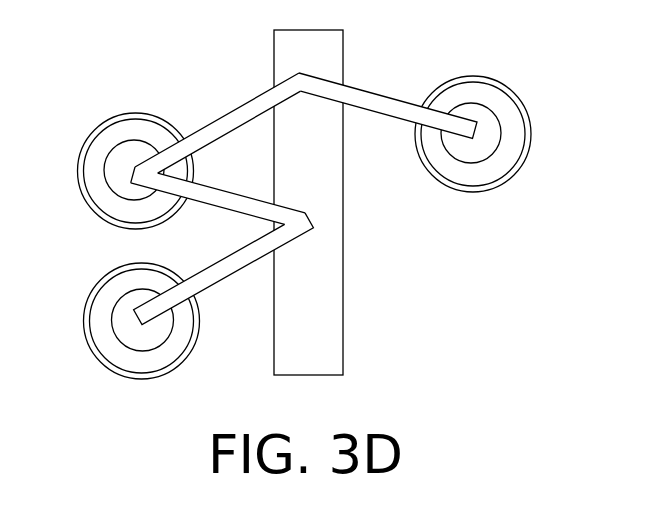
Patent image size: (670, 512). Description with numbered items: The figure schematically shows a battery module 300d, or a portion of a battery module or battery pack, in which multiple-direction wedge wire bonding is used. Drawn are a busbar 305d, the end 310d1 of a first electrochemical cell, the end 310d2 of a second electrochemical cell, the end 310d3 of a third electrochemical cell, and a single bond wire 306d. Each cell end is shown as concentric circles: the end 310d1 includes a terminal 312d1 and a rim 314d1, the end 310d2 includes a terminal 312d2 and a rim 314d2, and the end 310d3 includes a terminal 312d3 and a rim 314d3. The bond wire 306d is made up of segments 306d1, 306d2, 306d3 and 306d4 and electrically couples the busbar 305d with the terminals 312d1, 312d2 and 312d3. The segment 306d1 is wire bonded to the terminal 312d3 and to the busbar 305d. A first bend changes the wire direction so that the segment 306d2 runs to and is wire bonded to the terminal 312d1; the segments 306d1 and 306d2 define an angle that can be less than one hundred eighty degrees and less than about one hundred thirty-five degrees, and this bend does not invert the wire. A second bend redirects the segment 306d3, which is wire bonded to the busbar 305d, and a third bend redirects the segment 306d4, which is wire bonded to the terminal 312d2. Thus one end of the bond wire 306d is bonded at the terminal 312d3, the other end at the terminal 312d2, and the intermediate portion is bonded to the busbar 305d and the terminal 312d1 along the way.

The battery module 300d is at (527, 32).
The busbar 305d is at (333, 366).
The bond wire 306d is at (304, 187).
The segment 306d1 is at (400, 118).
The segment 306d2 is at (252, 123).
The segment 306d3 is at (208, 203).
The segment 306d4 is at (258, 259).
The end of first electrochemical cell 310d1 is at (102, 160).
The end of second electrochemical cell 310d2 is at (117, 342).
The end of third electrochemical cell 310d3 is at (474, 142).
The terminal 312d1 is at (130, 143).
The terminal 312d2 is at (167, 338).
The terminal 312d3 is at (452, 107).
The rim 314d1 is at (100, 222).
The rim 314d2 is at (117, 377).
The rim 314d3 is at (462, 193).